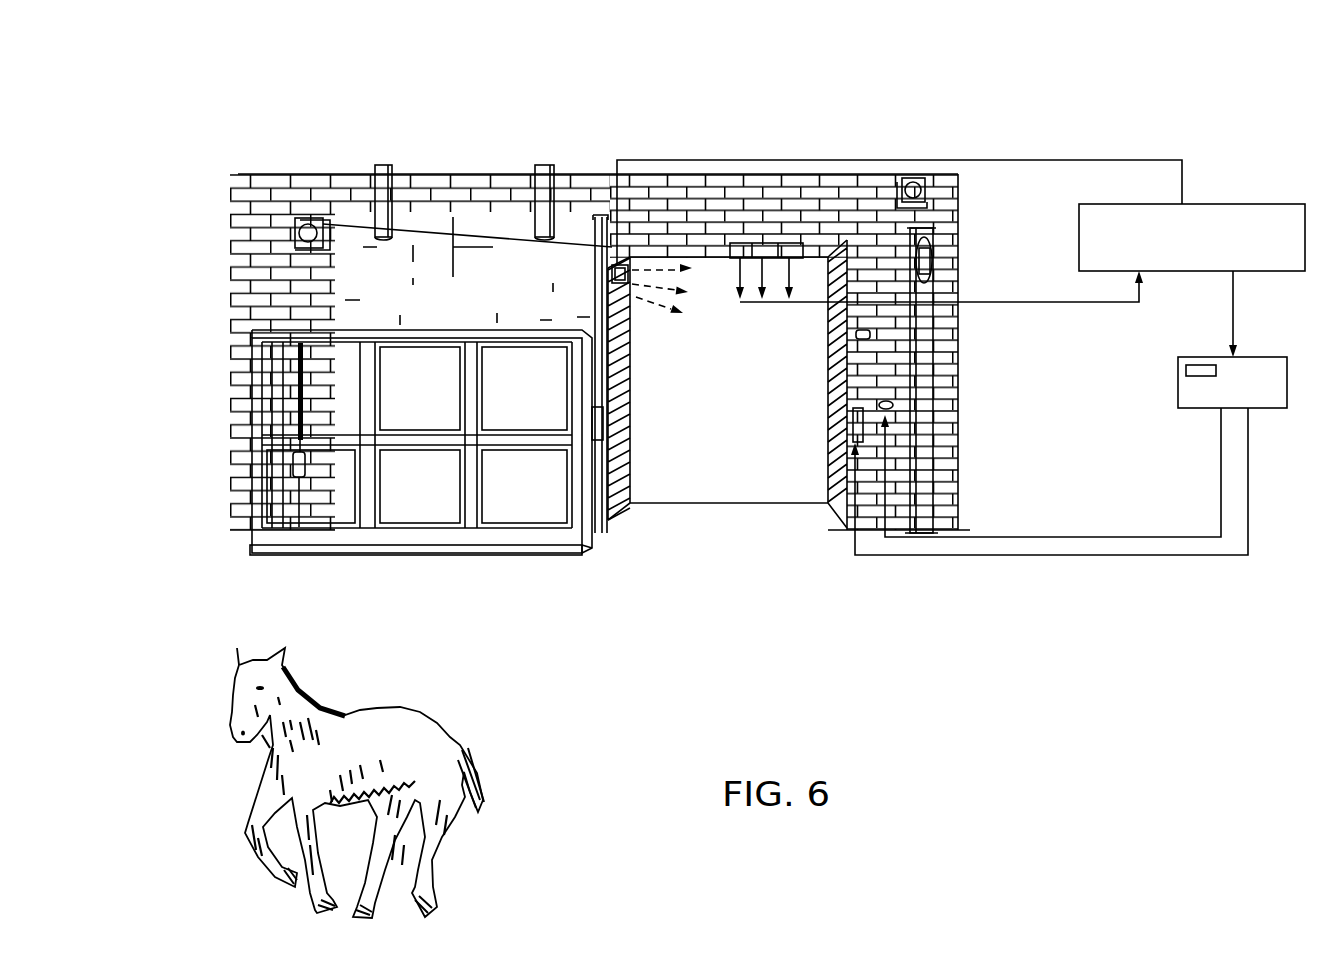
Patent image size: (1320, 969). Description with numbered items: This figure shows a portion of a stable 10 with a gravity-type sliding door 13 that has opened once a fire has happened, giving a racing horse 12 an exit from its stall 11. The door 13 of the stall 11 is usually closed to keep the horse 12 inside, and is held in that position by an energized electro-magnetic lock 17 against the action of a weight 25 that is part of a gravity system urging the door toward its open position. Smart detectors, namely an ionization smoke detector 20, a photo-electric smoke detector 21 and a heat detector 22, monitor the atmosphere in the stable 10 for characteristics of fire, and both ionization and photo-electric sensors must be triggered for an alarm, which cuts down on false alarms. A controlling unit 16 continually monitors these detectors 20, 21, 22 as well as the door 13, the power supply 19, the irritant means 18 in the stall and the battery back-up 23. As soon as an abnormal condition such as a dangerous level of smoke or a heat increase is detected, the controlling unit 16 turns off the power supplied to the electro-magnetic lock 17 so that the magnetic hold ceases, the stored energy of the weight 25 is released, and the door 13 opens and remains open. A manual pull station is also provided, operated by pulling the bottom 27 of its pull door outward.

The stable 10 is at (418, 160).
The stall 11 is at (725, 465).
The racing horse 12 is at (358, 710).
The door 13 is at (428, 411).
The controlling unit 16 is at (1264, 204).
The electro-magnetic lock 17 is at (603, 425).
The irritant means 18 is at (628, 285).
The power supply 19 is at (1200, 408).
The ionization smoke detector 20 is at (733, 243).
The photo-electric smoke detector 21 is at (765, 243).
The heat detector 22 is at (806, 260).
The battery back-up 23 is at (1186, 370).
The weight 25 is at (292, 470).
The bottom of the pull door 27 is at (893, 405).